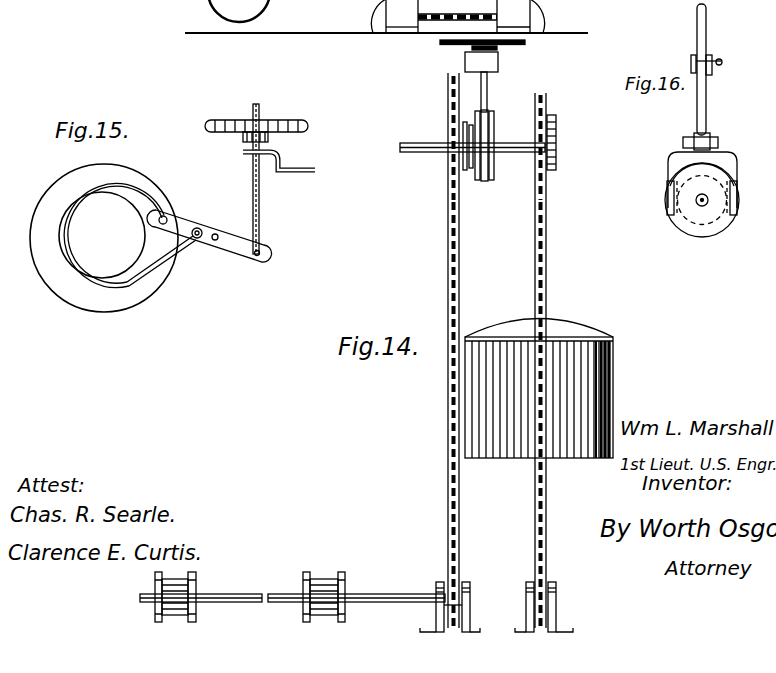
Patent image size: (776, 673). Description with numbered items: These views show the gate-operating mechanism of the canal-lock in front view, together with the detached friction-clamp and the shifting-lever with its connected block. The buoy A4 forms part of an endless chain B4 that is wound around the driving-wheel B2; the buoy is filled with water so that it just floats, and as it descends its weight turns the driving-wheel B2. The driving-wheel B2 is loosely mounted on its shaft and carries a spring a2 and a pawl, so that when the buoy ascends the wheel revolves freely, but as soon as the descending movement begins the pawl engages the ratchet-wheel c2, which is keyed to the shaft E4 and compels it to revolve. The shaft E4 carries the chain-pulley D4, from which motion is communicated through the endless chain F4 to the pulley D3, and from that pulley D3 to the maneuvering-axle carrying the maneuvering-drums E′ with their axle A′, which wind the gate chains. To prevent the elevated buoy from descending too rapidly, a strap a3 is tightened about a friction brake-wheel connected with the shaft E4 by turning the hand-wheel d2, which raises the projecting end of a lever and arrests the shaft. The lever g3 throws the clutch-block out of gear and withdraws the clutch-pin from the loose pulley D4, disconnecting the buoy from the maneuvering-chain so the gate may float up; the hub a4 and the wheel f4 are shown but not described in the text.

In FIG. 14, the hand-wheel d2 is at (482, 56).
In FIG. 14, the chain-pulley D4 is at (437, 136).
In FIG. 14, the endless chain F4 is at (433, 414).
In FIG. 14, the driving-wheel B2 is at (552, 146).
In FIG. 14, the endless chain B4 is at (551, 414).
In FIG. 14, the shaft E4 is at (471, 144).
In FIG. 14, the hub / band a4 is at (492, 145).
In FIG. 15, the hub / band a4 is at (130, 234).
In FIG. 14, the disc / wheel f4 is at (467, 155).
In FIG. 16, the disc / wheel f4 is at (712, 185).
In FIG. 14, the ratchet-wheel c2 is at (559, 142).
In FIG. 15, the ratchet-wheel c2 is at (209, 235).
In FIG. 14, the buoy A4 is at (640, 384).
In FIG. 14, the pulley D3 is at (472, 566).
In FIG. 14, the axle A′ is at (258, 587).
In FIG. 14, the maneuvering-drum E′ is at (215, 572).
In FIG. 15, the strap a3 is at (104, 238).
In FIG. 15, the spring a2 is at (260, 178).
In FIG. 16, the lever g3 is at (708, 69).